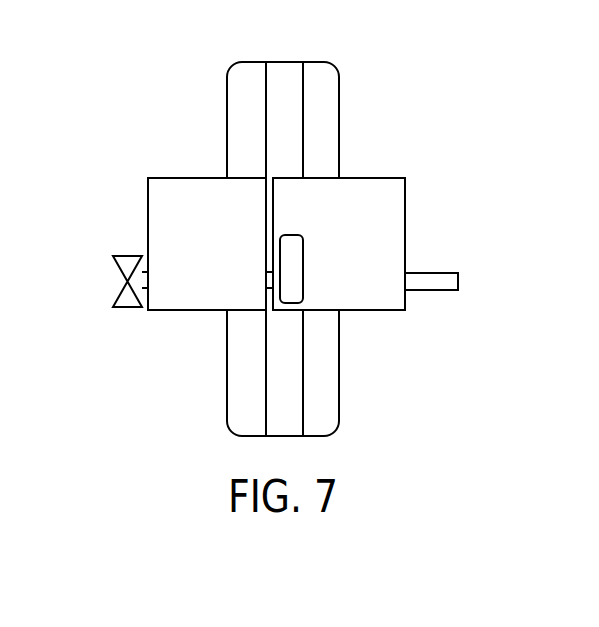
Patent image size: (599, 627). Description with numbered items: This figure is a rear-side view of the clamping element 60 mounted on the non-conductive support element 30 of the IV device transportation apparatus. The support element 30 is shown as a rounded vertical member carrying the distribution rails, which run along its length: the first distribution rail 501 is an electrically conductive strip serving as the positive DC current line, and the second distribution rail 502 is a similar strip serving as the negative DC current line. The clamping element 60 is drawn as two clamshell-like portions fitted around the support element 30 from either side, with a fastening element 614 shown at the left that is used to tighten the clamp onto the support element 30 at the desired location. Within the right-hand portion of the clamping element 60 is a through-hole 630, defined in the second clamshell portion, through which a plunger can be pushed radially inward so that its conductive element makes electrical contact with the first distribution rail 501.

The non-conductive support element 30 is at (227, 98).
The first distribution rail 501 is at (303, 62).
The second distribution rail 502 is at (266, 62).
The clamping element 60 is at (160, 225).
The fastening element 614 is at (130, 300).
The through-hole 630 is at (303, 282).